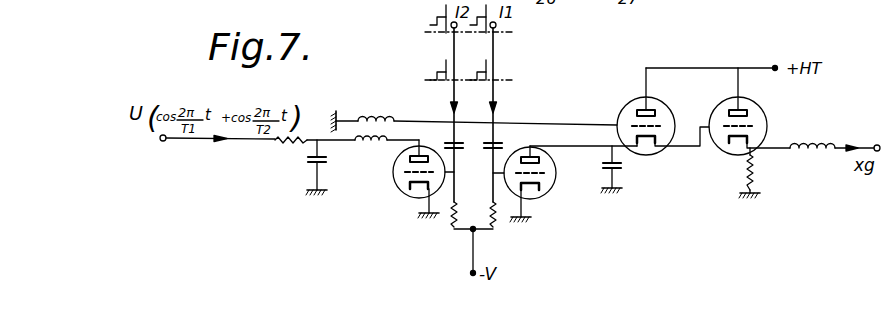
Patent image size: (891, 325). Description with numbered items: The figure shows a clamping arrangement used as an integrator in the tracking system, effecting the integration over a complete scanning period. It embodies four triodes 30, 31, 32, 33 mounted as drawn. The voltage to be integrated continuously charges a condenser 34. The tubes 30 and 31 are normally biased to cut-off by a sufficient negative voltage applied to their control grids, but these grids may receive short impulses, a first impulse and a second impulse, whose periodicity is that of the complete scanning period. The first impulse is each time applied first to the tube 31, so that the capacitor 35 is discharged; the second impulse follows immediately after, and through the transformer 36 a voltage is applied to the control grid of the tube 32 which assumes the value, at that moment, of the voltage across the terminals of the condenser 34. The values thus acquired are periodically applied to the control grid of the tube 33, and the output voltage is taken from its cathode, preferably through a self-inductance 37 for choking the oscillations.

The triode 30 is at (404, 193).
The triode 31 is at (554, 178).
The triode 32 is at (662, 153).
The triode 33 is at (765, 122).
The condenser 34 is at (327, 163).
The capacitor 35 is at (617, 171).
The transformer 36 is at (379, 113).
The self-inductance 37 is at (819, 154).